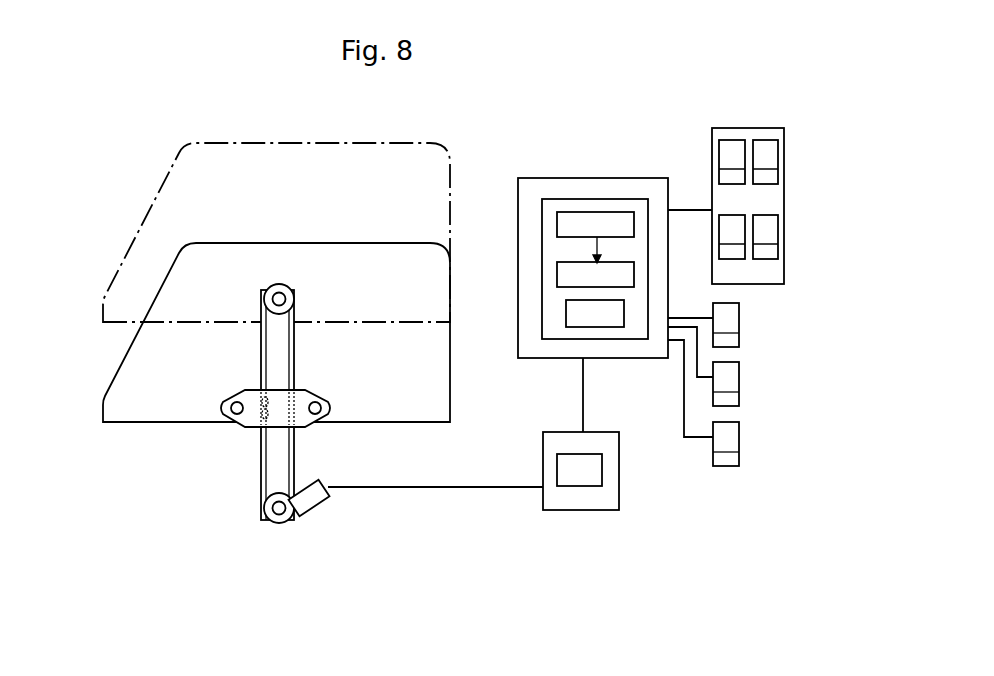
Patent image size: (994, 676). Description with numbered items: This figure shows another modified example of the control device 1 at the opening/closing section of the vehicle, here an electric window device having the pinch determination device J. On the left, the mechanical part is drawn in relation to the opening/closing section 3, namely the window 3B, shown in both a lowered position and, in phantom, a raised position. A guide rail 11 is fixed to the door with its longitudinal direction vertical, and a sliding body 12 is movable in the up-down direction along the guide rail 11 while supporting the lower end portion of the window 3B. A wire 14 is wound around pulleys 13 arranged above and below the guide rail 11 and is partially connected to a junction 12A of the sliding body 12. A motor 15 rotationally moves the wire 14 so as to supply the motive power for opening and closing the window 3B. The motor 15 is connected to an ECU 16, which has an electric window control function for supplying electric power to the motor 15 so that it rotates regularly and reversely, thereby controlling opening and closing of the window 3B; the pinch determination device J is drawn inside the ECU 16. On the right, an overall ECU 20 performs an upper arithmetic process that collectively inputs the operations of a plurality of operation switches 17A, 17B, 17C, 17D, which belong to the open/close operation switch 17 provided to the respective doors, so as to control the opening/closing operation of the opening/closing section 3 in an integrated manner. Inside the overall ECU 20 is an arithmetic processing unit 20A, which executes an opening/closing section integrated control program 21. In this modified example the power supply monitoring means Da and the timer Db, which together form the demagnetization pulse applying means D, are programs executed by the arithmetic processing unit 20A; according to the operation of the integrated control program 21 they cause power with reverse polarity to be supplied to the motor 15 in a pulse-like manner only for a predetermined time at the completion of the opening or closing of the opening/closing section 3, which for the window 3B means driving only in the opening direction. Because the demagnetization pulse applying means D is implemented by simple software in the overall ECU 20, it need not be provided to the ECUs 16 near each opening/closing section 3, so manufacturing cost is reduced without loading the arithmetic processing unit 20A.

The control device at the opening/closing section of the vehicle 1 is at (620, 148).
The opening/closing section 3 is at (428, 243).
The window 3B is at (490, 164).
The guide rail 11 is at (253, 505).
The sliding body 12 is at (239, 430).
The junction 12A is at (258, 411).
The pulleys 13 is at (270, 290).
The wire 14 is at (297, 462).
The motor 15 is at (317, 500).
The ECU 16 is at (597, 432).
The pinch determination device J is at (602, 472).
The open/close operation switch 17 is at (785, 150).
The operation switch 17A is at (763, 142).
The operation switch 17B is at (740, 318).
The operation switch 17C is at (740, 377).
The operation switch 17D is at (740, 437).
The overall ECU 20 is at (580, 178).
The arithmetic processing unit 20A is at (595, 199).
The opening/closing section integrated control program 21 is at (557, 222).
The demagnetization pulse applying means D is at (486, 259).
The power supply monitoring means Da is at (557, 272).
The timer Db is at (566, 312).